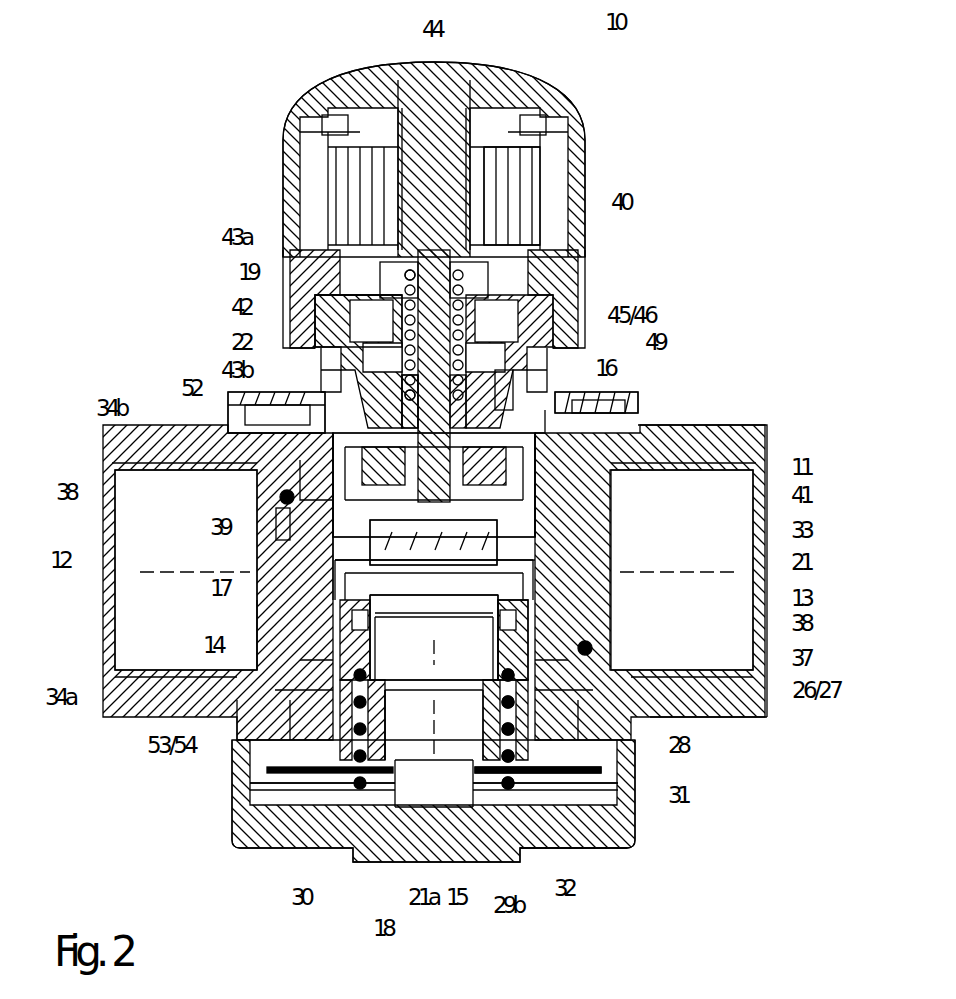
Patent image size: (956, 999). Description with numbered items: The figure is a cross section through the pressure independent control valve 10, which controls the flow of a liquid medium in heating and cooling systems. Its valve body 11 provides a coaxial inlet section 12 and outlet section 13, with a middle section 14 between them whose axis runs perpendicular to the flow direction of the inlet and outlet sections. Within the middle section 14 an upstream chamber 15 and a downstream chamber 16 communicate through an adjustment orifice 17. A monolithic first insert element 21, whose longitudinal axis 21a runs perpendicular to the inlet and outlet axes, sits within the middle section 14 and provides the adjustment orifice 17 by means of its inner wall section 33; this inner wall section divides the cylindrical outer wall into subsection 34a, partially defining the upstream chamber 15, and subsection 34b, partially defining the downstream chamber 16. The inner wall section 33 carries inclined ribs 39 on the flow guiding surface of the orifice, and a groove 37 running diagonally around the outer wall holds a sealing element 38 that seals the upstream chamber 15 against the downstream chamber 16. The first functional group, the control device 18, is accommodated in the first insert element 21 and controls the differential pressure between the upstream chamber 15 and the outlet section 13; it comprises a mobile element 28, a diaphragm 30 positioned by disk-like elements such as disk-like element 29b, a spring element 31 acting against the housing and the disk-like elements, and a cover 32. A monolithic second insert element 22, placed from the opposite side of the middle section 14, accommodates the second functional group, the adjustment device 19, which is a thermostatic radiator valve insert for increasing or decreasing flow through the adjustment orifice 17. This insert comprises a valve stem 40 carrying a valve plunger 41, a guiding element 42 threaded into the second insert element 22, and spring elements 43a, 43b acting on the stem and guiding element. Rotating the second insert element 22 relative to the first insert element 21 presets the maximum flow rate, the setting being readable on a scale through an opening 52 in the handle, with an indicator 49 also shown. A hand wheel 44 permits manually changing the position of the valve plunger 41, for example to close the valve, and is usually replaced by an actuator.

The pressure independent control valve 10 is at (583, 60).
The valve body 11 is at (755, 430).
The inlet section 12 is at (135, 572).
The outlet section 13 is at (732, 598).
The middle section 14 is at (272, 620).
The upstream chamber 15 is at (463, 642).
The downstream chamber 16 is at (548, 397).
The adjustment orifice 17 is at (335, 580).
The control device 18 is at (398, 868).
The adjustment device 19 is at (358, 285).
The first insert element 21 is at (575, 600).
The longitudinal axis of the first insert element 21a is at (440, 745).
The second insert element 22 is at (322, 383).
The mobile element 28 is at (520, 715).
The disk-like element 29b is at (497, 830).
The diaphragm 30 is at (315, 845).
The spring element 31 is at (630, 806).
The cover 32 is at (558, 815).
The inner wall section 33 is at (505, 560).
The subsection 34a is at (233, 657).
The subsection 34b is at (320, 490).
The groove 37 is at (600, 650).
The sealing element 38 is at (85, 496).
The ribs 39 is at (290, 524).
The valve stem 40 is at (465, 232).
The valve plunger 41 is at (560, 442).
The guiding element 42 is at (360, 322).
The spring element 43a is at (405, 272).
The spring element 43b is at (318, 395).
The hand wheel 44 is at (437, 78).
The indicator 49 is at (628, 386).
The opening 52 is at (300, 412).